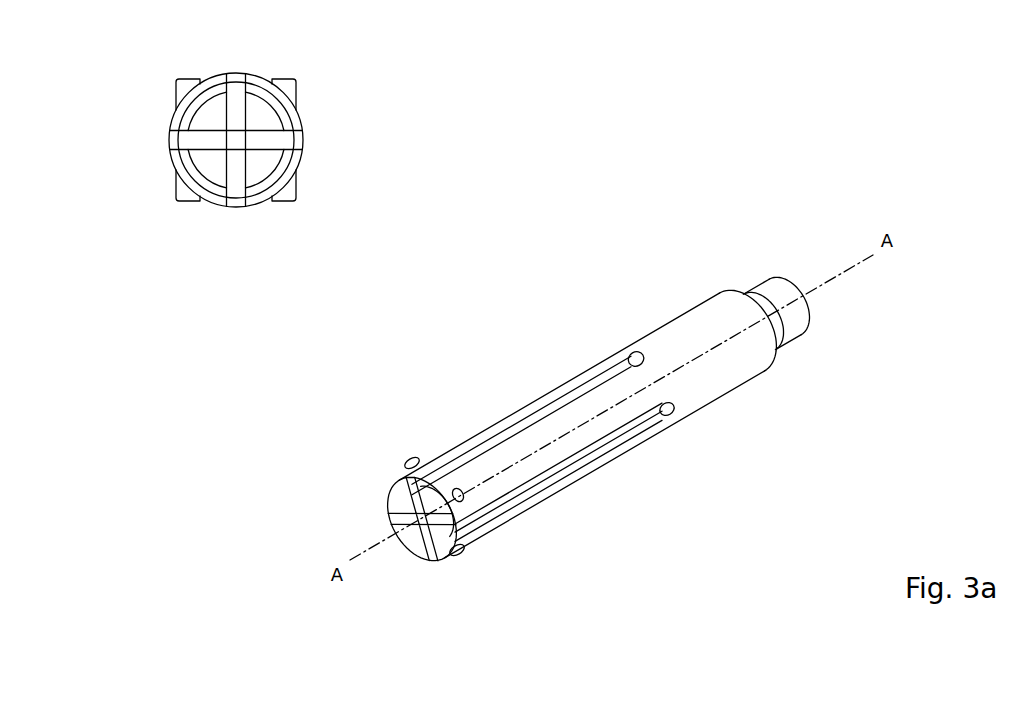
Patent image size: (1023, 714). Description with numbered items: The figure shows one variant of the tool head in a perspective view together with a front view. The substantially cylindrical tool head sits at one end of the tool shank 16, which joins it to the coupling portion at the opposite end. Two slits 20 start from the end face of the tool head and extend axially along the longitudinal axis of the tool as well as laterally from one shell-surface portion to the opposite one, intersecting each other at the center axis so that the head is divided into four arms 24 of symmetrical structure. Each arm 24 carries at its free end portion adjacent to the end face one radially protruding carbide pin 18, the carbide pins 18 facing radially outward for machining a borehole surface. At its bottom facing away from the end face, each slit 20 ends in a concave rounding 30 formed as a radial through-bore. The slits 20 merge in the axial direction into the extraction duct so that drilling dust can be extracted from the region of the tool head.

The tool shank 16 is at (775, 288).
The carbide pin 18 is at (178, 200).
The slit 20 is at (238, 190).
The arm 24 is at (173, 122).
The concave rounding 30 is at (677, 418).